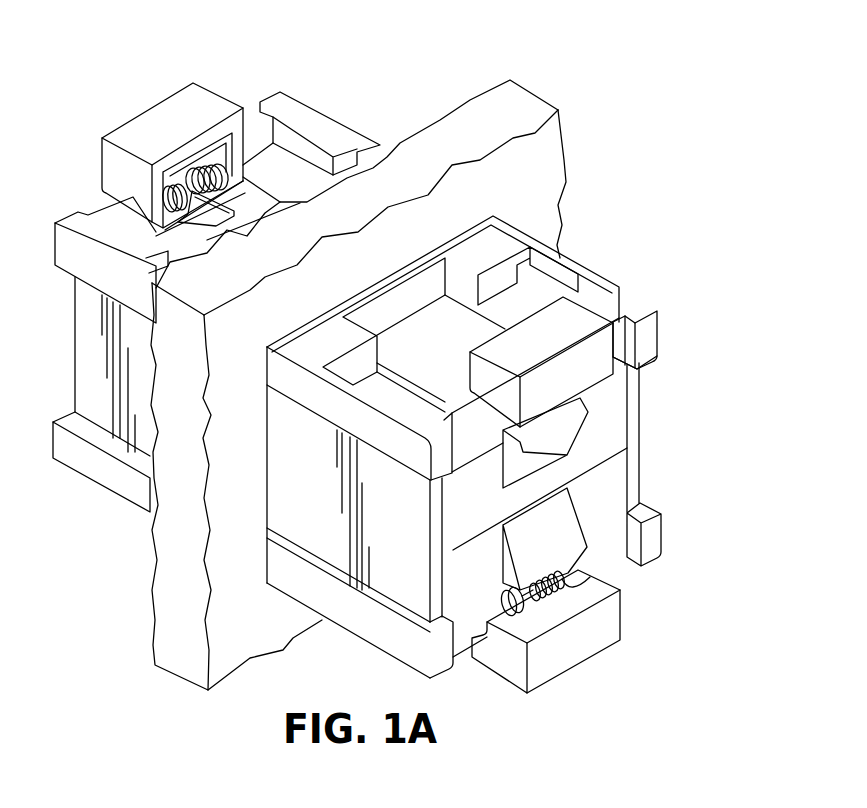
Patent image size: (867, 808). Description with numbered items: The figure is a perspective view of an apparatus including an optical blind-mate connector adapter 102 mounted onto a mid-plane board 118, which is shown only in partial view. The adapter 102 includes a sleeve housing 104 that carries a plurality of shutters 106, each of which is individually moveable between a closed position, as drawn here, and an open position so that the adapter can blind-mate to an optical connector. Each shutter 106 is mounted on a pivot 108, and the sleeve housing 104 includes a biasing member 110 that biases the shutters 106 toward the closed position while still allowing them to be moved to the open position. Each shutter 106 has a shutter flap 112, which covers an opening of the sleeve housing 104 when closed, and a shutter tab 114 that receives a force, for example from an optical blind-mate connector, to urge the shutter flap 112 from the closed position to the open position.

The optical blind-mate connector adapter 102 is at (112, 94).
The sleeve housing 104 is at (590, 271).
The shutters 106 is at (463, 628).
The pivot 108 is at (616, 322).
The biasing member 110 is at (208, 232).
The shutter flap 112 is at (613, 407).
The shutter tab 114 is at (578, 667).
The mid-plane board 118 is at (537, 97).